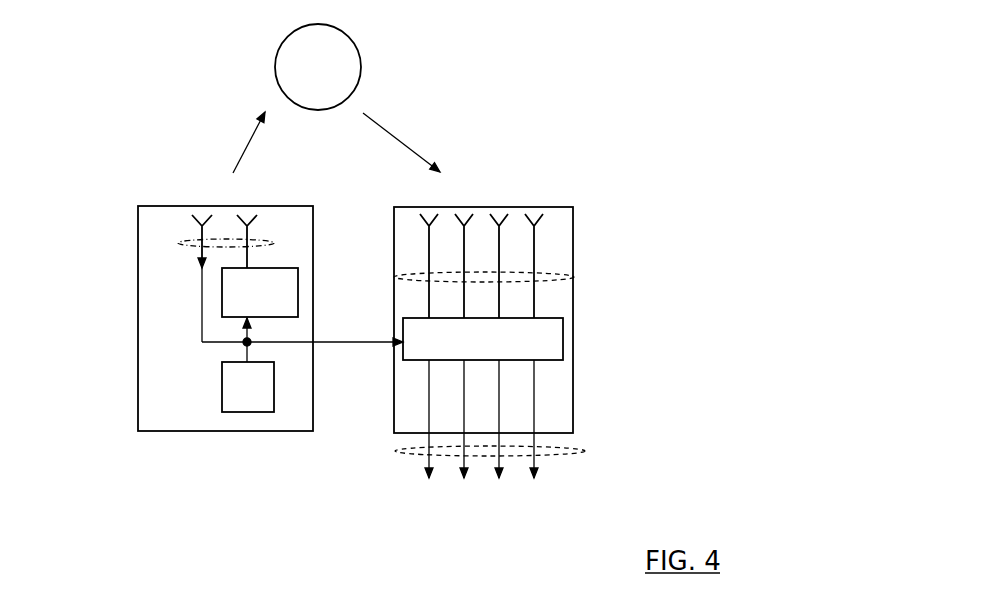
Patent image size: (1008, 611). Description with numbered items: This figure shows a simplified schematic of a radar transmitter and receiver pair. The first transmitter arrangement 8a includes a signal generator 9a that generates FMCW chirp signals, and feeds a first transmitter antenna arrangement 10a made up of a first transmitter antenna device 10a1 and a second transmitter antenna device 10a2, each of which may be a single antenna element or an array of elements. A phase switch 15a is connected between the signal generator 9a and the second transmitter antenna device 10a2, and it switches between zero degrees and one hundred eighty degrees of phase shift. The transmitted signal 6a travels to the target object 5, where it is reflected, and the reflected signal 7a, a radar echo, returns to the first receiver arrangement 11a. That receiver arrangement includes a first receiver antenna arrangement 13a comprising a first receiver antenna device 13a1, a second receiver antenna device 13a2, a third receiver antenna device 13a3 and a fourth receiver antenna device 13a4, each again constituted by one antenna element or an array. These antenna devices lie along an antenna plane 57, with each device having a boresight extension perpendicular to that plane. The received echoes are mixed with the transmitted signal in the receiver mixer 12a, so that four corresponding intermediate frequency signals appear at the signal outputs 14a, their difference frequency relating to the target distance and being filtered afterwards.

The target object 5 is at (318, 78).
The transmitted signal 6a is at (245, 143).
The reflected signal 7a is at (385, 135).
The first transmitter arrangement 8a is at (196, 395).
The signal generator 9a is at (262, 395).
The first transmitter antenna arrangement 10a is at (183, 247).
The first transmitter antenna device 10a1 is at (197, 223).
The second transmitter antenna device 10a2 is at (240, 225).
The first receiver arrangement 11a is at (573, 383).
The receiver mixer 12a is at (519, 352).
The first receiver antenna arrangement 13a is at (573, 278).
The first receiver antenna device 13a1 is at (500, 228).
The second receiver antenna device 13a2 is at (500, 228).
The third receiver antenna device 13a3 is at (500, 258).
The fourth receiver antenna device 13a4 is at (537, 262).
The signal outputs 14a is at (573, 442).
The phase switch 15a is at (280, 304).
The antenna plane 57 is at (578, 208).